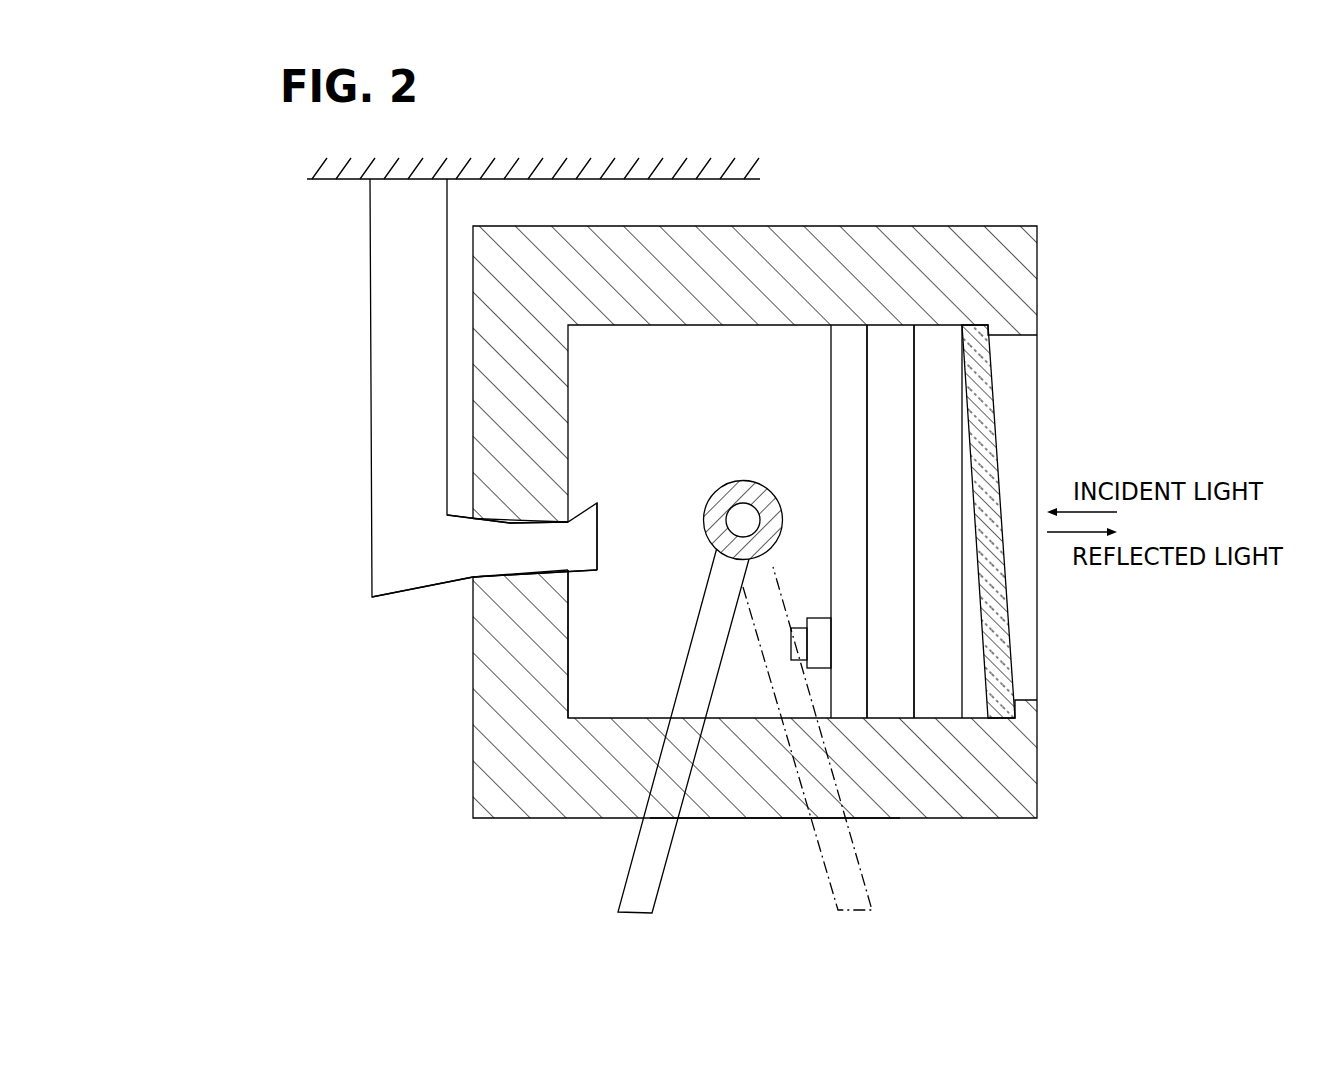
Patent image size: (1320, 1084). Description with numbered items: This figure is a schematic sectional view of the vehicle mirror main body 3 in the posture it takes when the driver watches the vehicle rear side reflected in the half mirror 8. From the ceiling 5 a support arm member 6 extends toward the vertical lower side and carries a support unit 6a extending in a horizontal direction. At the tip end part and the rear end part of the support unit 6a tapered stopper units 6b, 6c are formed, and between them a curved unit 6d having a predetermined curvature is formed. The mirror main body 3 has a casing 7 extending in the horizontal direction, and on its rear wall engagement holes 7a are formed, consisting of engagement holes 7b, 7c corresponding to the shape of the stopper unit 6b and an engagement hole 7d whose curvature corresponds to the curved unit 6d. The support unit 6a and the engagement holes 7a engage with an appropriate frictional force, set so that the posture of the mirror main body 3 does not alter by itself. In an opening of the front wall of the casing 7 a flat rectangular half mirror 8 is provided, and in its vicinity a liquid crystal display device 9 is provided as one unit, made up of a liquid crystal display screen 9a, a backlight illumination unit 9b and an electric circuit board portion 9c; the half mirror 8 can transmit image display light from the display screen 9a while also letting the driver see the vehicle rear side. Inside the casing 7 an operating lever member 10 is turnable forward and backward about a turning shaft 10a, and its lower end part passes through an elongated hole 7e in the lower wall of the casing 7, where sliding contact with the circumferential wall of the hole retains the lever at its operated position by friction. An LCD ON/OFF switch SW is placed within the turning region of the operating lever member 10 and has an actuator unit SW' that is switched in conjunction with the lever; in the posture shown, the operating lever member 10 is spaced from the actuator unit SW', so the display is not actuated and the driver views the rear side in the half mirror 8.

The vehicle mirror main body 3 is at (694, 506).
The ceiling 5 is at (525, 147).
The support arm member 6 is at (491, 477).
The support unit 6a is at (520, 520).
The stopper unit 6b is at (457, 575).
The stopper unit 6c is at (594, 506).
The curved unit 6d is at (520, 573).
The casing 7 is at (666, 503).
The engagement holes 7a is at (553, 513).
The engagement hole 7b is at (480, 573).
The engagement hole 7c is at (580, 573).
The engagement hole 7d is at (505, 524).
The elongated hole 7e is at (777, 800).
The half mirror 8 is at (988, 477).
The liquid crystal display device 9 is at (898, 408).
The liquid crystal display screen 9a is at (938, 343).
The backlight illumination unit 9b is at (892, 347).
The electric circuit board portion 9c is at (845, 340).
The operating lever member 10 is at (745, 668).
The turning shaft 10a is at (751, 526).
The LCD ON/OFF switch SW is at (858, 593).
The actuator unit SW' is at (800, 600).